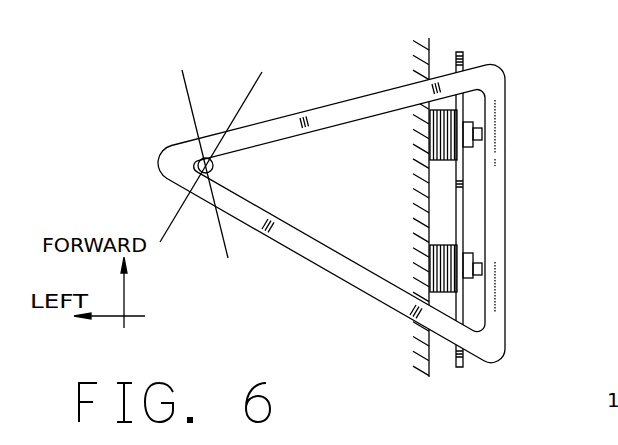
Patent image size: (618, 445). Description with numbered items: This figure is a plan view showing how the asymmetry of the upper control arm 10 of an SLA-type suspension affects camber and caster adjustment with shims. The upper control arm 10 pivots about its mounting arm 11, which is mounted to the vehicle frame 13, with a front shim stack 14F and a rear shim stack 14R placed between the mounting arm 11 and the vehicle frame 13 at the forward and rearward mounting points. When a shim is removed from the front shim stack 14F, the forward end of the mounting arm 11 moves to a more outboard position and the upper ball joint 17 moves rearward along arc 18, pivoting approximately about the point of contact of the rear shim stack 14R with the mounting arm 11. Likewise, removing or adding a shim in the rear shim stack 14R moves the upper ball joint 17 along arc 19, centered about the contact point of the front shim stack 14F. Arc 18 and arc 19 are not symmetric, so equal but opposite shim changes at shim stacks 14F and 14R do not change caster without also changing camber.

The upper control arm 10 is at (493, 77).
The mounting arm 11 is at (462, 52).
The vehicle frame 13 is at (418, 67).
The front shim stack 14F is at (447, 128).
The rear shim stack 14R is at (447, 278).
The upper ball joint 17 is at (180, 147).
The arc 18 is at (245, 98).
The arc 19 is at (188, 100).